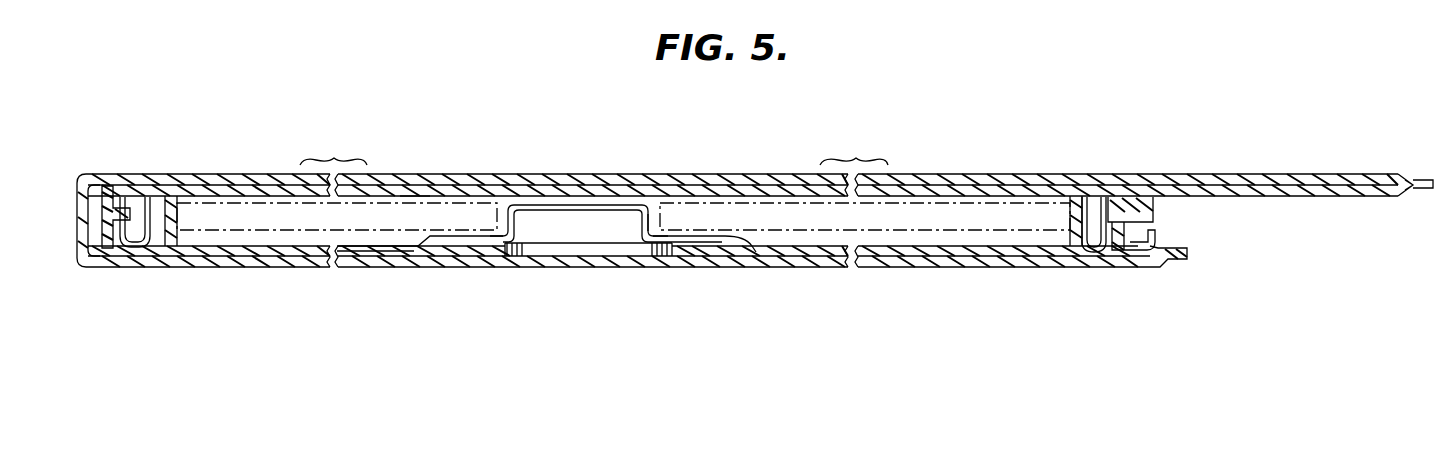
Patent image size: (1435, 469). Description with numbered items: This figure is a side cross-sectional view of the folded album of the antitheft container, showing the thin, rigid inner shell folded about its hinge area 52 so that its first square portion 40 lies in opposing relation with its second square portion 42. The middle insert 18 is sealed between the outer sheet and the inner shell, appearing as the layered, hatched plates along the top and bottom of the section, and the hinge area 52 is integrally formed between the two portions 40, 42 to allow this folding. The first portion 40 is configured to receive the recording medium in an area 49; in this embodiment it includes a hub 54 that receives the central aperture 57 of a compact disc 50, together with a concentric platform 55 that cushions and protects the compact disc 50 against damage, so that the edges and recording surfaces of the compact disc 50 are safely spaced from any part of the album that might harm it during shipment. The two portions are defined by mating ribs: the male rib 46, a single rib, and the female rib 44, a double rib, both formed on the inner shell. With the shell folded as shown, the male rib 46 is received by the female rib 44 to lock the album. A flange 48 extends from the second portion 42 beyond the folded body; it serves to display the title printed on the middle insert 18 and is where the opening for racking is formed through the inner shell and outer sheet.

The middle insert 18 is at (612, 176).
The first square portion 40 is at (374, 240).
The second square portion 42 is at (414, 196).
The female rib 44 is at (157, 232).
The male rib 46 is at (128, 203).
The flange 48 is at (1293, 178).
The area 49 is at (662, 218).
The compact disc 50 is at (923, 225).
The hinge area 52 is at (78, 228).
The hub 54 is at (572, 208).
The concentric platform 55 is at (753, 254).
The central aperture 57 is at (645, 226).